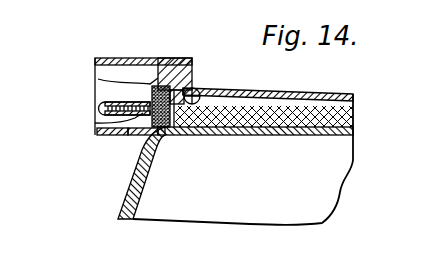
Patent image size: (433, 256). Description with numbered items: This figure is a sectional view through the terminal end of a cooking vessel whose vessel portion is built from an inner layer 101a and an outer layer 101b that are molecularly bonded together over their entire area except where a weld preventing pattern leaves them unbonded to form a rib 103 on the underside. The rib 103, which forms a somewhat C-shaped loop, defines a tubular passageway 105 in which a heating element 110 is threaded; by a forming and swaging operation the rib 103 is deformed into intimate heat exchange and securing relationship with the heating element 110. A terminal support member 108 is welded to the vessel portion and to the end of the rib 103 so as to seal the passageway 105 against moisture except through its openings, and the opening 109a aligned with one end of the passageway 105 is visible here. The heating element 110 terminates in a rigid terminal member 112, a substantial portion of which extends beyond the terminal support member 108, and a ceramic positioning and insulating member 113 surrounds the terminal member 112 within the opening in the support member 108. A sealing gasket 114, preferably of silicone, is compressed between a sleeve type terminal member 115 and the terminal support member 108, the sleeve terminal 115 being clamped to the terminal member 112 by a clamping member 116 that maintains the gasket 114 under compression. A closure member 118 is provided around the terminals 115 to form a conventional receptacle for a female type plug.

The inner layer 101a is at (137, 205).
The outer layer 101b is at (119, 207).
The rib 103 is at (331, 96).
The passageway 105 is at (240, 97).
The terminal support member 108 is at (180, 61).
The opening 109a is at (219, 91).
The heating element 110 is at (270, 128).
The rigid terminal member 112 is at (95, 123).
The ceramic positioning and insulating member 113 is at (157, 88).
The sealing gasket 114 is at (98, 79).
The sleeve type terminal member 115 is at (100, 102).
The clamping member 116 is at (118, 132).
The closure member 118 is at (129, 133).